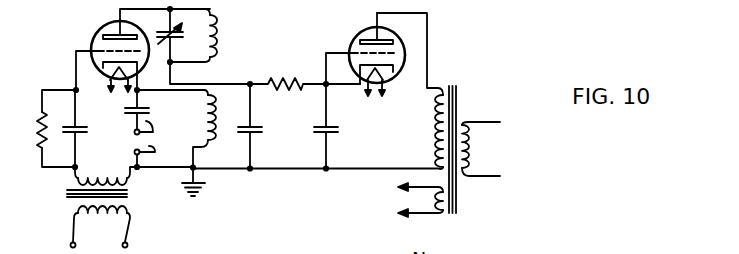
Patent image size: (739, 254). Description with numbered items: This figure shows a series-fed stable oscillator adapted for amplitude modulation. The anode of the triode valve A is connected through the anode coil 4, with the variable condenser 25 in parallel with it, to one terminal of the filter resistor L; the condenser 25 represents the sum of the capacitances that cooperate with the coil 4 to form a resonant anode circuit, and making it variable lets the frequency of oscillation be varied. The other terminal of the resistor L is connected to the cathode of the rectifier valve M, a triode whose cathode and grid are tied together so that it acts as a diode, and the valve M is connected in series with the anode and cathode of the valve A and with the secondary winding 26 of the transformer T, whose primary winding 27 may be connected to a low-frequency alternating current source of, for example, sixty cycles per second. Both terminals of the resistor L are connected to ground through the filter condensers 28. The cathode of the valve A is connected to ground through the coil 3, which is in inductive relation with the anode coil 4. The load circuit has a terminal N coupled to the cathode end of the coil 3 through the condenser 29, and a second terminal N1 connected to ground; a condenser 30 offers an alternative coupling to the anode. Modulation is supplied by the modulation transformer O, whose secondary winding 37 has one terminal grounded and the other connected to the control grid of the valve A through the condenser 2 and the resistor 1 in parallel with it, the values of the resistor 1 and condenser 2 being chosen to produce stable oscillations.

The triode valve A is at (98, 27).
The rectifier valve M is at (358, 27).
The resistor 1 is at (36, 126).
The condenser 2 is at (88, 129).
The condenser 29 is at (125, 110).
The terminal of the load circuit N is at (155, 128).
The second terminal of the load circuit N1 is at (179, 143).
The secondary winding 37 is at (111, 174).
The modulation transformer O is at (67, 192).
The coil 3 is at (218, 102).
The variable condenser 25 is at (199, 38).
The coil 4 is at (218, 34).
The filter resistor L is at (291, 68).
The filter condensers 28 is at (313, 130).
The secondary winding 26 is at (433, 125).
The transformer T is at (456, 85).
The primary winding 27 is at (500, 122).
The condenser 30 is at (357, 253).